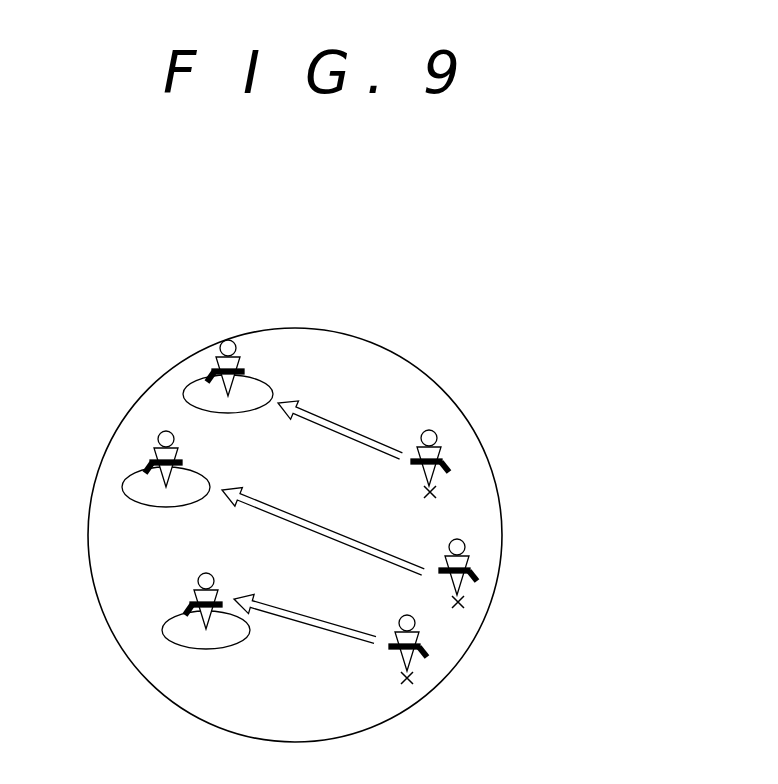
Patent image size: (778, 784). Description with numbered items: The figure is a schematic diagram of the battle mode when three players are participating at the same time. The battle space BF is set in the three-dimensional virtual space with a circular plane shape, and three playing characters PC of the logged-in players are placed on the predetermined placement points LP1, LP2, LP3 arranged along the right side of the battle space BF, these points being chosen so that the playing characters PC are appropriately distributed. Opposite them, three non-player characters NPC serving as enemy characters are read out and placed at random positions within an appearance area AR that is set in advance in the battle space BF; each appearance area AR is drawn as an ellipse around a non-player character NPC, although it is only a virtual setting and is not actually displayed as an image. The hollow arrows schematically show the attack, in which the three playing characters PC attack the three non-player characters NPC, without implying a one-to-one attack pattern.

The battle space BF is at (393, 318).
The appearance area AR is at (188, 384).
The non-player character NPC is at (229, 340).
The playing character PC is at (452, 433).
The placement point LP1 is at (460, 607).
The placement point LP2 is at (443, 490).
The placement point LP3 is at (415, 683).